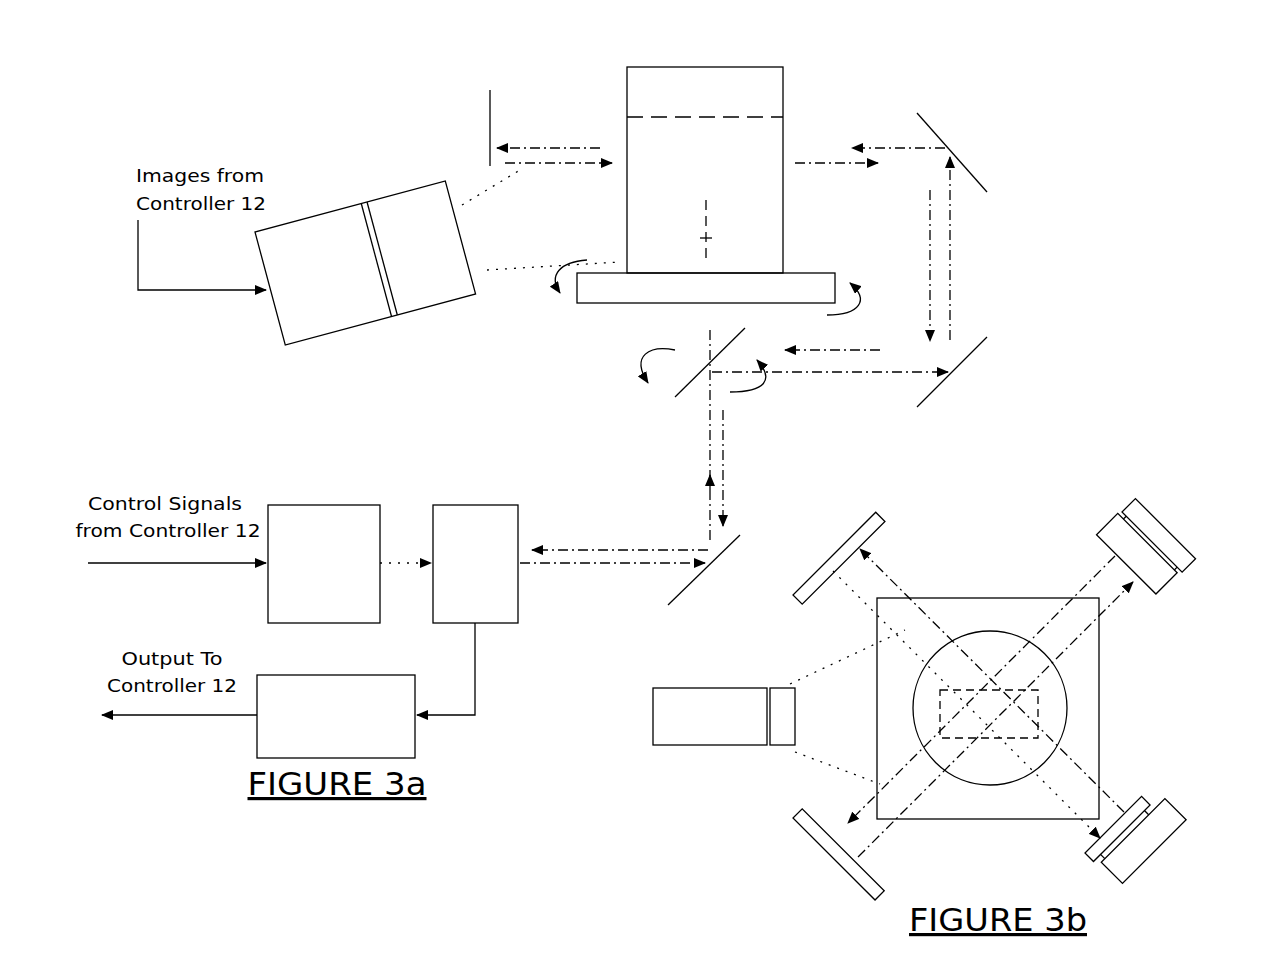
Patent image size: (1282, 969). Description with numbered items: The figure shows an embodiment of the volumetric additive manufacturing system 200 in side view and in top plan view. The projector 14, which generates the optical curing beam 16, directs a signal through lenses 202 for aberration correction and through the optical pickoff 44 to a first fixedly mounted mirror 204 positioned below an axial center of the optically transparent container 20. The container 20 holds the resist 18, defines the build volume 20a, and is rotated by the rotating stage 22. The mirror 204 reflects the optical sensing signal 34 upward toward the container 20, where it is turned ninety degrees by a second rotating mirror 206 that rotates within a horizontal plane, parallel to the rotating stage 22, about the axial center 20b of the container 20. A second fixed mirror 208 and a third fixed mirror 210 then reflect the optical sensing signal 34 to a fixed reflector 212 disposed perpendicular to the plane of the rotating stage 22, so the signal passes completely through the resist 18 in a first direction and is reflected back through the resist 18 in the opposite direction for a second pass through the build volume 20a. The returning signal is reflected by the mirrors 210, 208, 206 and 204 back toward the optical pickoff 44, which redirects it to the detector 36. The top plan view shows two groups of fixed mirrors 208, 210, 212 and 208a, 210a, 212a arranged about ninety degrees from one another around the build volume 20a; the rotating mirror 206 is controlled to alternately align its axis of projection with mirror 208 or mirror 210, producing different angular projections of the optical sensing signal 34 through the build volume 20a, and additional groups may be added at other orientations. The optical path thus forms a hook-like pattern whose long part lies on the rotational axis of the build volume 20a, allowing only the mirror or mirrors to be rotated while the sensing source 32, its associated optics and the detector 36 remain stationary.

In FIG. 3a, the volumetric additive manufacturing system 200 is at (333, 73).
In FIG. 3b, the volumetric additive manufacturing system 200 is at (1108, 443).
In FIG. 3a, the projector 14 is at (325, 279).
In FIG. 3b, the projector 14 is at (710, 716).
In FIG. 3a, the optical curing beam 16 is at (365, 241).
In FIG. 3b, the optical curing beam 16 is at (724, 709).
In FIG. 3a, the resist 18 is at (697, 120).
In FIG. 3b, the resist 18 is at (1012, 632).
In FIG. 3a, the optically transparent container 20 is at (696, 150).
In FIG. 3b, the optically transparent container 20 is at (964, 636).
In FIG. 3a, the build volume 20a is at (706, 178).
In FIG. 3a, the axial center 20b is at (712, 238).
In FIG. 3a, the rotating stage 22 is at (580, 300).
In FIG. 3b, the rotating stage 22 is at (988, 708).
In FIG. 3a, the sensing source 32 is at (324, 564).
In FIG. 3a, the optical sensing signal 34 is at (513, 148).
In FIG. 3b, the optical sensing signal 34 is at (1067, 653).
In FIG. 3a, the detector 36 is at (336, 716).
In FIG. 3a, the optical pickoff 44 is at (492, 523).
In FIG. 3a, the lenses 202 is at (468, 203).
In FIG. 3b, the lenses 202 is at (782, 746).
In FIG. 3a, the first fixedly mounted mirror 204 is at (688, 598).
In FIG. 3a, the second rotating mirror 206 is at (677, 397).
In FIG. 3b, the second rotating mirror 206 is at (1040, 708).
In FIG. 3a, the second fixed mirror 208 is at (978, 335).
In FIG. 3b, the second fixed mirror 208 is at (1150, 866).
In FIG. 3b, the second fixed mirror of second group 208a is at (1128, 505).
In FIG. 3a, the third fixed mirror 210 is at (927, 125).
In FIG. 3b, the third fixed mirror 210 is at (1152, 803).
In FIG. 3b, the third fixed mirror of second group 210a is at (1183, 580).
In FIG. 3a, the fixed reflector 212 is at (490, 125).
In FIG. 3b, the fixed reflector 212 is at (832, 550).
In FIG. 3b, the fixed reflector of second group 212a is at (838, 860).